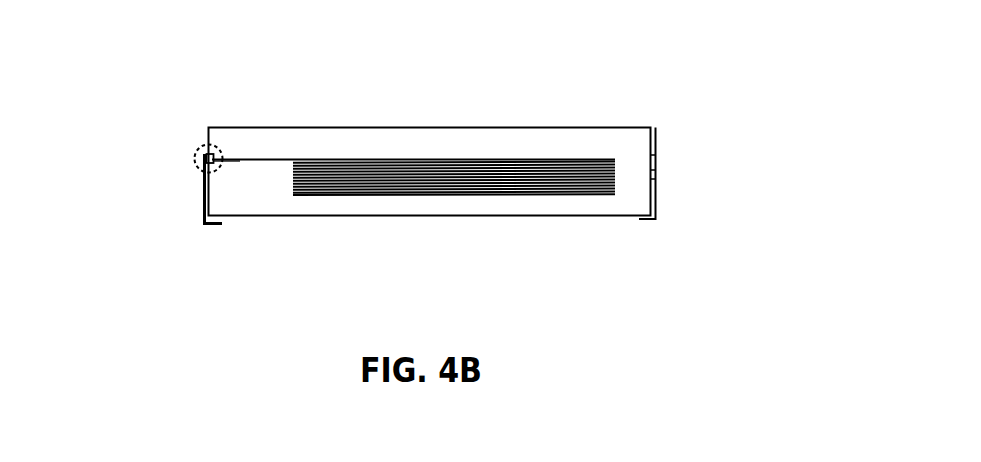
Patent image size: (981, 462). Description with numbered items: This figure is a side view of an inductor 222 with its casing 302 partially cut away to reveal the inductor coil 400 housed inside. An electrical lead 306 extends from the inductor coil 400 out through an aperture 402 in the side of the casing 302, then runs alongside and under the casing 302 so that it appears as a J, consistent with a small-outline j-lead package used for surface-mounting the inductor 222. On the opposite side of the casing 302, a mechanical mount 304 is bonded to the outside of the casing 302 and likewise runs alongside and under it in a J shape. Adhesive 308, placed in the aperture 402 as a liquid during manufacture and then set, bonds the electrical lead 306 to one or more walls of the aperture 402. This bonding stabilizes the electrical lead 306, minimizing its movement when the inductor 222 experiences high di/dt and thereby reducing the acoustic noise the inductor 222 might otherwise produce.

The inductor 222 is at (625, 272).
The casing 302 is at (602, 113).
The mechanical mount 304 is at (667, 200).
The electrical lead 306 is at (200, 193).
The adhesive 308 is at (213, 163).
The inductor coil 400 is at (460, 147).
The aperture 402 is at (202, 147).